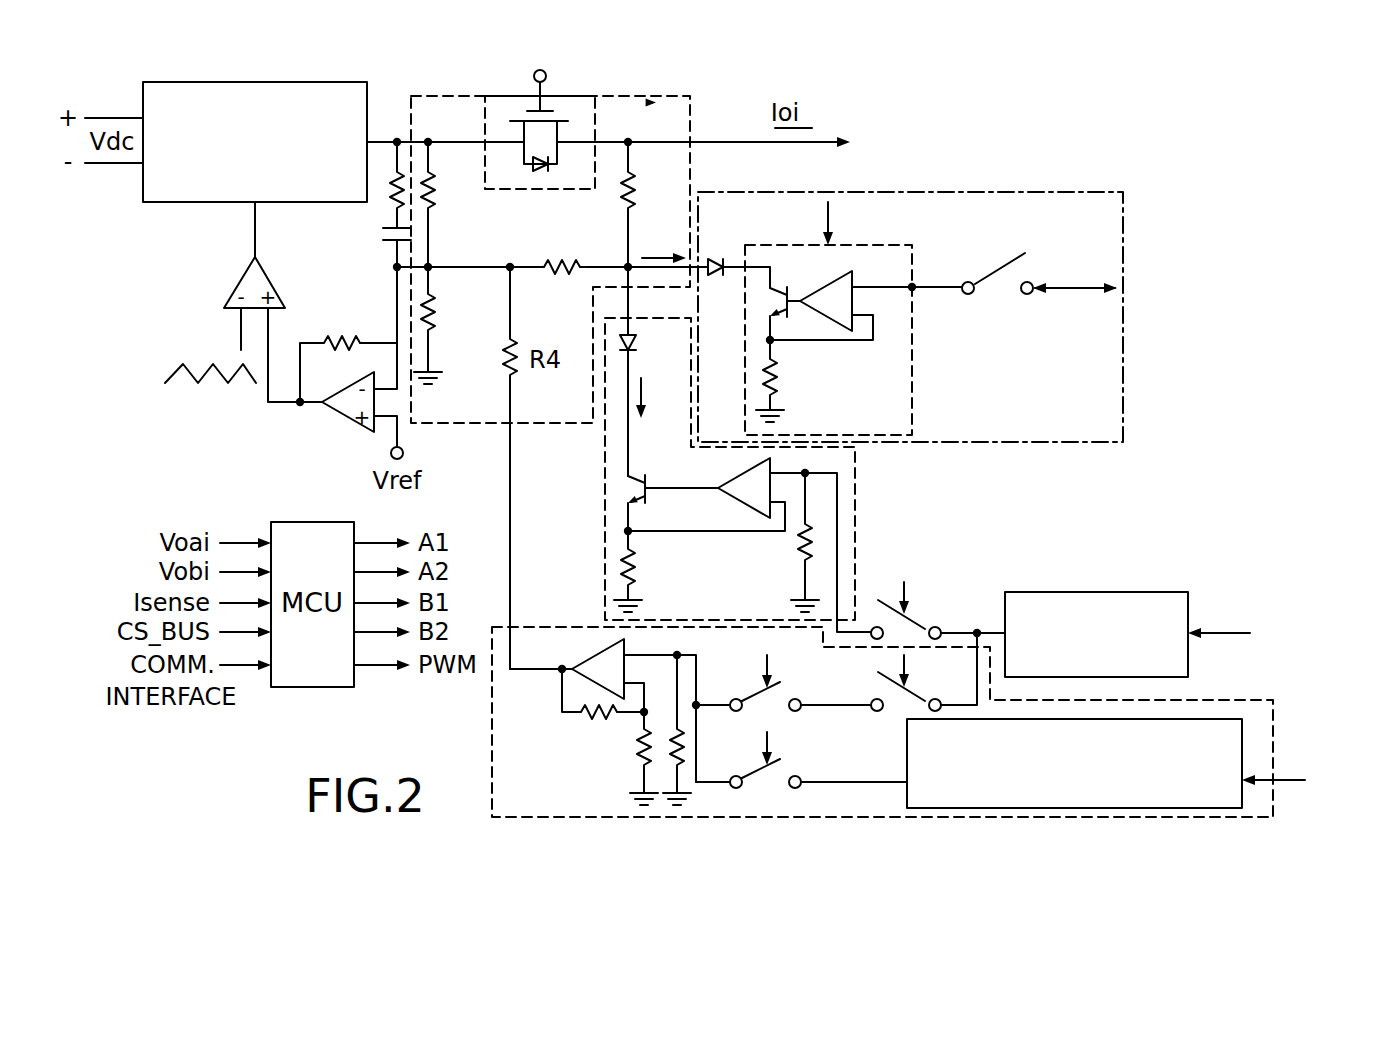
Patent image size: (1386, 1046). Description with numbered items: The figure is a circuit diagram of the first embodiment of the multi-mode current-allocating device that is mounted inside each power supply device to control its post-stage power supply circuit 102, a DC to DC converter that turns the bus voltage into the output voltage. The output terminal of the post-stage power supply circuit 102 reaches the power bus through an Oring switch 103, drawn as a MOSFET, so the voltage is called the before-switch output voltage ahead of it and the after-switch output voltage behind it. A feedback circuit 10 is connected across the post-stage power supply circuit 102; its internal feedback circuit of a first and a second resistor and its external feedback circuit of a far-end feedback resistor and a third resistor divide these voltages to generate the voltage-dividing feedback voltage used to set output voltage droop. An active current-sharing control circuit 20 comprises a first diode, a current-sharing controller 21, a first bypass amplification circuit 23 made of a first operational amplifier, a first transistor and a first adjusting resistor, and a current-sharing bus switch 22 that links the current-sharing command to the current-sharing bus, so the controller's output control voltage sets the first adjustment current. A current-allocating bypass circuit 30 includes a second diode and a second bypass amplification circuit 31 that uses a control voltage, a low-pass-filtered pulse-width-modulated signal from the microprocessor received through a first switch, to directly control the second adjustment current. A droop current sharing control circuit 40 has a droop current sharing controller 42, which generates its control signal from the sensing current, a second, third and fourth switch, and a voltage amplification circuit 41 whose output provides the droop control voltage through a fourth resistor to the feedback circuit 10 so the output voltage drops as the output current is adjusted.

The post-stage power supply circuit 102 is at (252, 92).
The feedback circuit 10 is at (448, 95).
The Oring switch 103 is at (572, 98).
The active current-sharing control circuit 20 is at (964, 284).
The current-sharing controller 21 is at (882, 318).
The current-sharing bus switch 22 is at (1010, 268).
The first bypass amplification circuit 23 is at (838, 360).
The current-allocating bypass circuit 30 is at (780, 449).
The second bypass amplification circuit 31 is at (746, 548).
The droop current sharing control circuit 40 is at (884, 699).
The voltage amplification circuit 41 is at (586, 734).
The droop current sharing controller 42 is at (1228, 742).